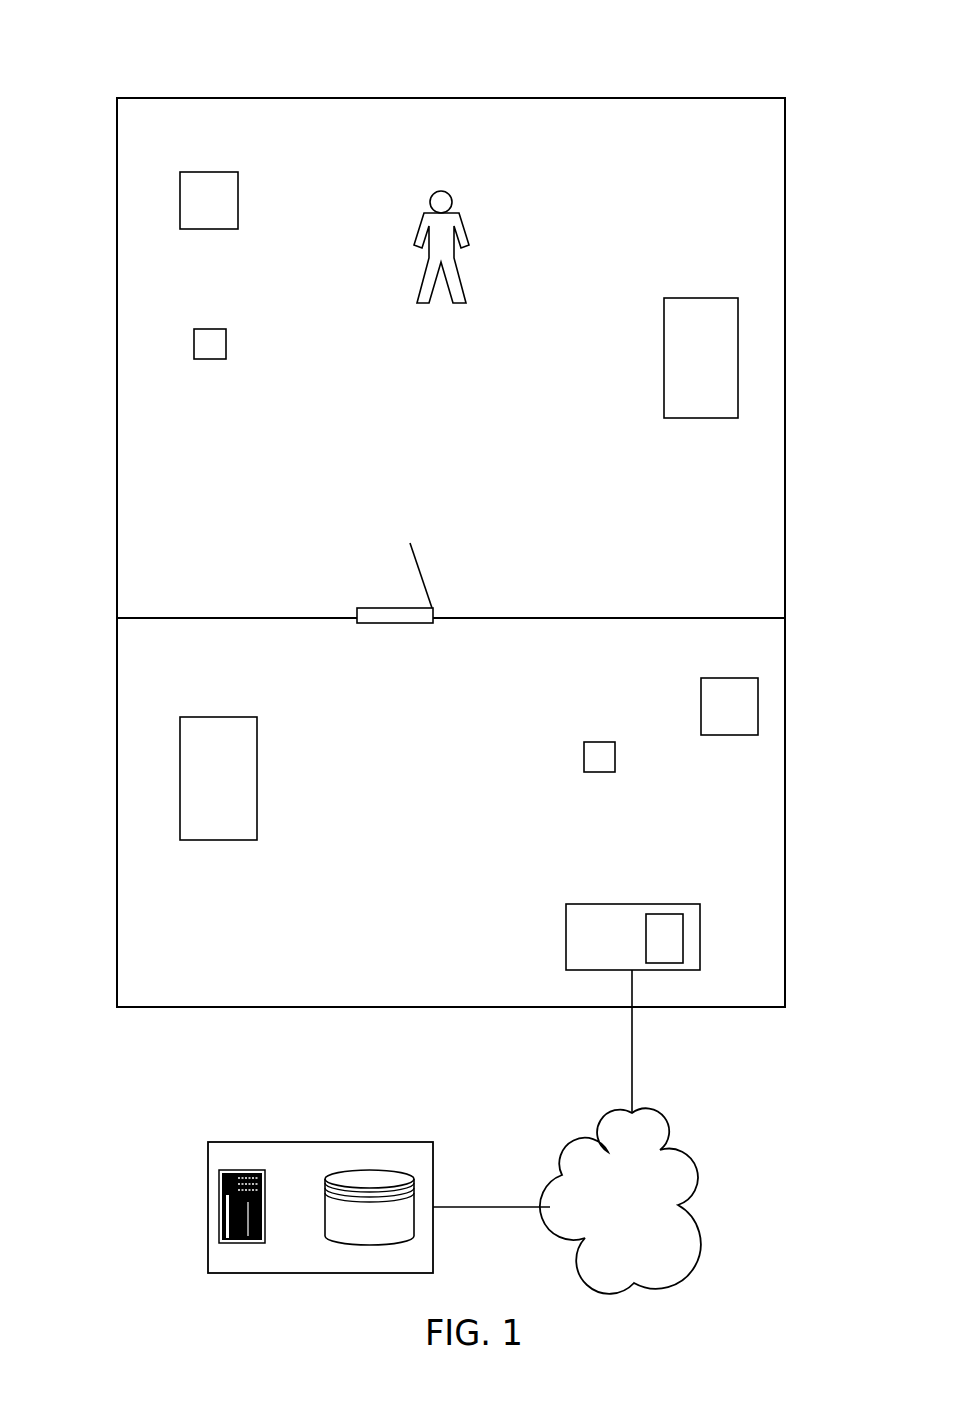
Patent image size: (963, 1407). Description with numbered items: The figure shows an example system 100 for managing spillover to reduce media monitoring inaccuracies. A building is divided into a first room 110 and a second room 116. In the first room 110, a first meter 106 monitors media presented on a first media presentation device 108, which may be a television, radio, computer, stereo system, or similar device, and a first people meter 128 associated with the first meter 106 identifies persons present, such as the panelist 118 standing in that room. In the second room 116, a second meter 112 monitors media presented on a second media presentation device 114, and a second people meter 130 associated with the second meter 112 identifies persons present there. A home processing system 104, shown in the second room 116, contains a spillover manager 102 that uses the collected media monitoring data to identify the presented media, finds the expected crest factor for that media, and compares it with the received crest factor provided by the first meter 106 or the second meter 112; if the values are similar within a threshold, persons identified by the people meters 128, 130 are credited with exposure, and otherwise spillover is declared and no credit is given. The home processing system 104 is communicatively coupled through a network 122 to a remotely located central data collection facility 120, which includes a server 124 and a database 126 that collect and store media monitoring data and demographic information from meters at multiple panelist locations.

The system 100 is at (157, 68).
The spillover manager 102 is at (664, 937).
The home processing system 104 is at (634, 904).
The first meter 106 is at (209, 172).
The first media presentation device 108 is at (700, 298).
The first room 110 is at (450, 98).
The second meter 112 is at (728, 678).
The second media presentation device 114 is at (218, 717).
The second room 116 is at (450, 1007).
The panelist 118 is at (442, 191).
The central data collection facility 120 is at (320, 1273).
The network 122 is at (705, 1172).
The server 124 is at (244, 1170).
The database 126 is at (368, 1170).
The first people meter 128 is at (208, 329).
The second people meter 130 is at (600, 742).